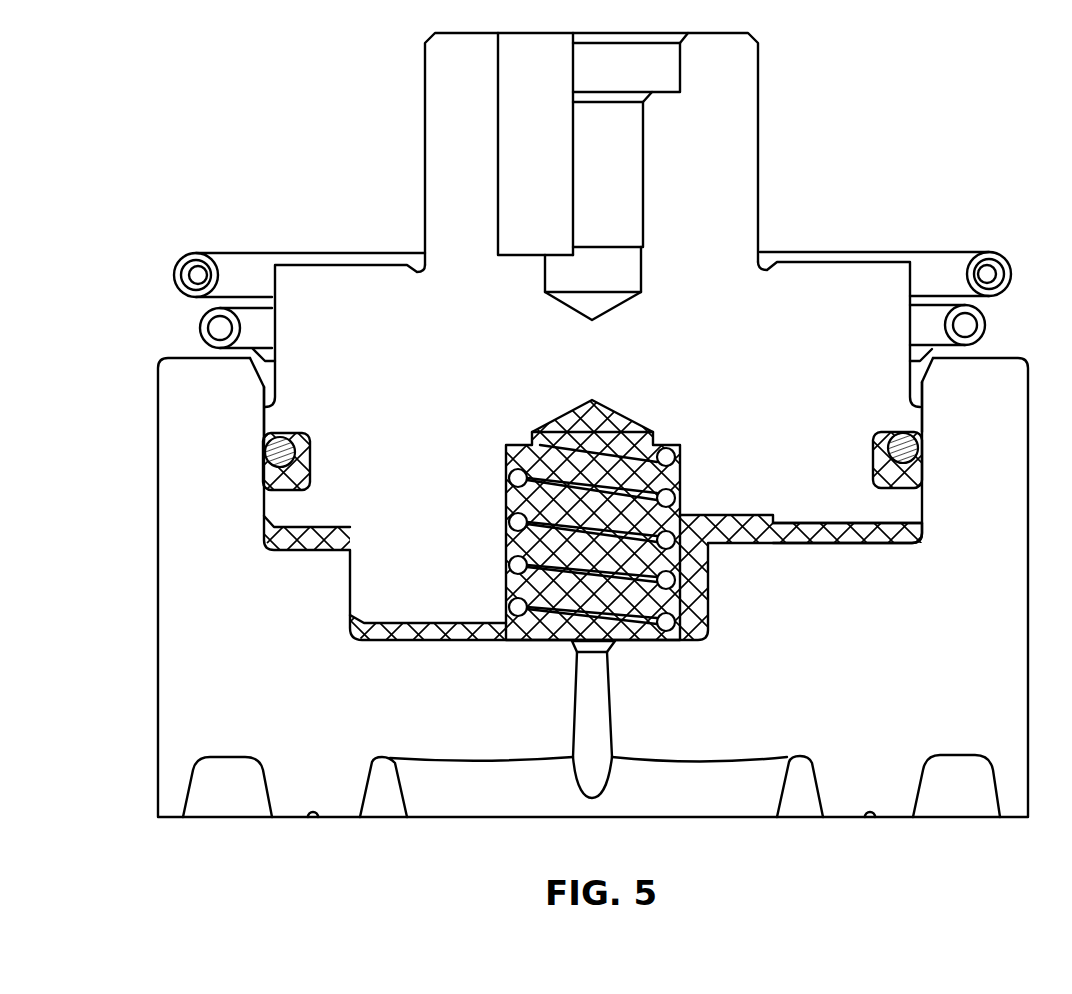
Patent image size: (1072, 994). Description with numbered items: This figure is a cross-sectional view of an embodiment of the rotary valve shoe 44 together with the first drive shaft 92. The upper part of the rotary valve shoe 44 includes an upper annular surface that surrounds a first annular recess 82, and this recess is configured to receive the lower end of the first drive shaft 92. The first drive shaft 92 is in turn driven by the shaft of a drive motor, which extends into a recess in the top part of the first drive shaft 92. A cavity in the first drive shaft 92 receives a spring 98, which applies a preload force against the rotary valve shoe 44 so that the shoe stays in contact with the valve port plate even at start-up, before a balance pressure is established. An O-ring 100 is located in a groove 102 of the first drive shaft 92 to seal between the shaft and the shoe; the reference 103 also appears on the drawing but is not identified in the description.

The valve body 44 is at (225, 663).
The piston 82 is at (263, 410).
The actuator plunger 92 is at (338, 292).
The spring 98 is at (507, 533).
The seal 100 is at (263, 450).
The O-ring 102 is at (312, 458).
The flange 103 is at (823, 528).